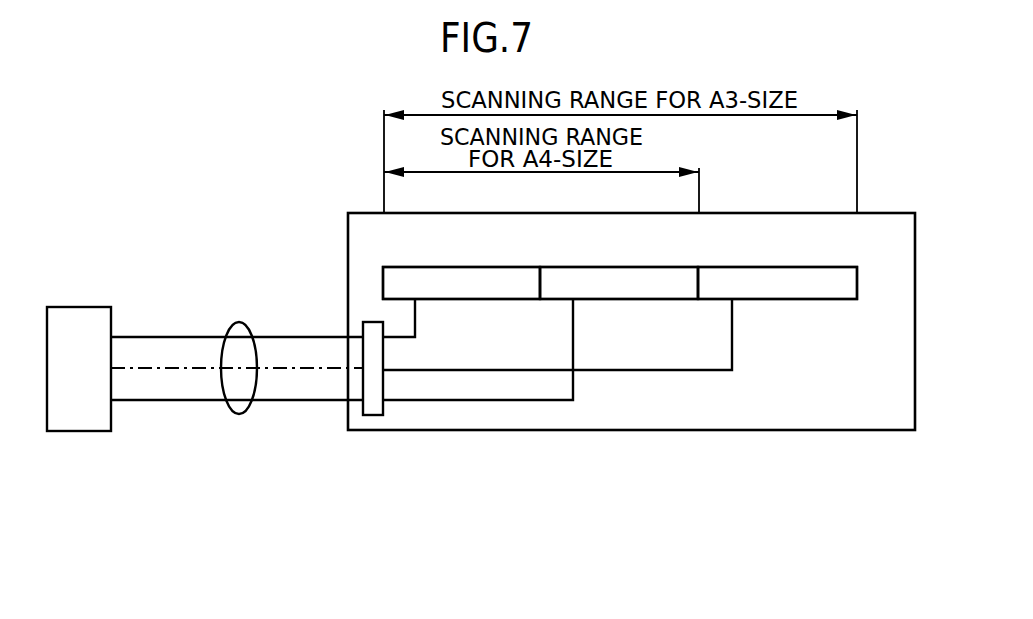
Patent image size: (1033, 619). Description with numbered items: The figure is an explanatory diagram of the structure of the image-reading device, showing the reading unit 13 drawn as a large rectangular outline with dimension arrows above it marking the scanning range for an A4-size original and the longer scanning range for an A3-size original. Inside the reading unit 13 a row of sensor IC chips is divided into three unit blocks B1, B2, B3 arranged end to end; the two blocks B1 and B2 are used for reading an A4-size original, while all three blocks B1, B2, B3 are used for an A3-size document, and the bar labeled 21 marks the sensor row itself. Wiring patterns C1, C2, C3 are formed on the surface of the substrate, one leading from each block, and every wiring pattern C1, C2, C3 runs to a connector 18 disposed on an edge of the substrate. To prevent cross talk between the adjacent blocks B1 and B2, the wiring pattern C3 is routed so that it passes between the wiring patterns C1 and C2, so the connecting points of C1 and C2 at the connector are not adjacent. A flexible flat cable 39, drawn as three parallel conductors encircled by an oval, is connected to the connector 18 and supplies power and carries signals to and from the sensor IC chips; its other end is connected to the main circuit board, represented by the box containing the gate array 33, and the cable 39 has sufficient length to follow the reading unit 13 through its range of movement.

The reading unit 13 is at (806, 212).
The line sensor 21 is at (833, 299).
The connector 18 is at (376, 415).
The gate array 33 is at (80, 307).
The flexible flat cable 39 is at (239, 416).
The block B1 is at (447, 267).
The block B2 is at (603, 267).
The block B3 is at (762, 267).
The wiring pattern C1 is at (415, 320).
The wiring pattern C2 is at (573, 328).
The wiring pattern C3 is at (732, 345).